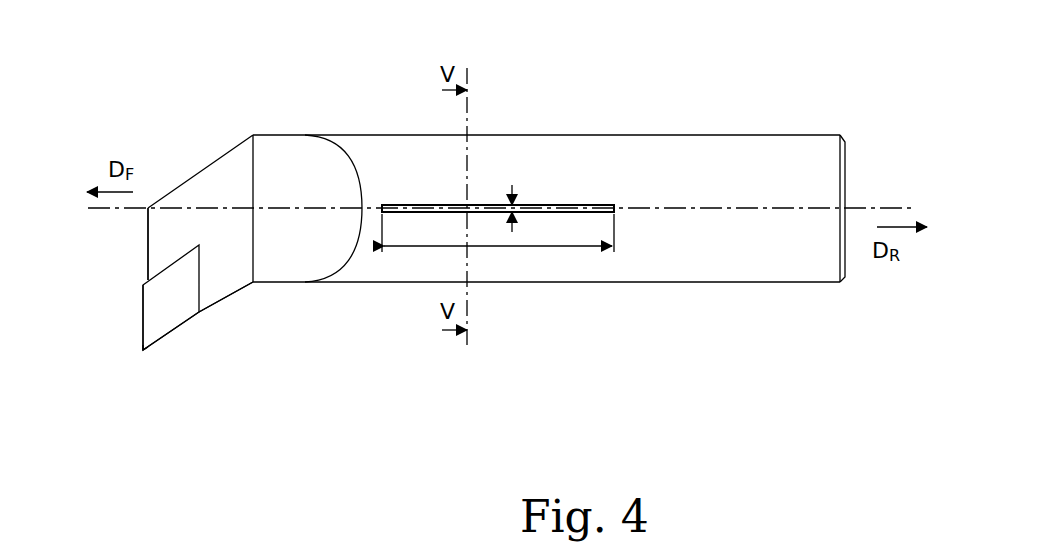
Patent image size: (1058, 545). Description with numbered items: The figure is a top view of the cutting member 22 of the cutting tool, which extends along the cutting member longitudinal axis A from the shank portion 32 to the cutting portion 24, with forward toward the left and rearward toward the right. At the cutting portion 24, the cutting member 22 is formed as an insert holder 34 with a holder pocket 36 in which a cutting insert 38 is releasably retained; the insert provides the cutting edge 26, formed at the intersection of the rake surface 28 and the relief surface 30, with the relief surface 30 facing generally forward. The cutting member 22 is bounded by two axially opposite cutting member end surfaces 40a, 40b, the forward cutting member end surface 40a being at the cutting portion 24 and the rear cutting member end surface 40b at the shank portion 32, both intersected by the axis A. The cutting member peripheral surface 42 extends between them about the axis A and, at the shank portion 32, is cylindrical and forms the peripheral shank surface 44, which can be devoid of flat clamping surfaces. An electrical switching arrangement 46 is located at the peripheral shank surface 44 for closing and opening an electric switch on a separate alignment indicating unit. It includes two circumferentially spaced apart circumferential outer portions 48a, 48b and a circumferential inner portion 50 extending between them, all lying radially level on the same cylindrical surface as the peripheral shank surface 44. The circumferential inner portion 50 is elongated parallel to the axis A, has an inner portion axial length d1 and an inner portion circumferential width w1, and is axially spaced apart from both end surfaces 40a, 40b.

The cutting member 22 is at (494, 210).
The insert holder 34 is at (494, 210).
The cutting portion 24 is at (195, 133).
The cutting edge 26 is at (142, 330).
The rake surface 28 is at (155, 328).
The relief surface 30 is at (138, 342).
The shank portion 32 is at (589, 233).
The holder pocket 36 is at (208, 280).
The cutting insert 38 is at (167, 352).
The forward cutting member end surface 40a is at (150, 262).
The rear cutting member end surface 40b is at (847, 163).
The cutting member peripheral surface 42 is at (717, 253).
The peripheral shank surface 44 is at (568, 263).
The electrical switching arrangement 46 is at (467, 242).
The circumferential outer portion 48a is at (412, 190).
The circumferential outer portion 48b is at (423, 228).
The circumferential inner portion 50 is at (427, 203).
The cutting member longitudinal axis A is at (887, 208).
The inner portion circumferential width w1 is at (498, 201).
The inner portion axial length d1 is at (485, 247).